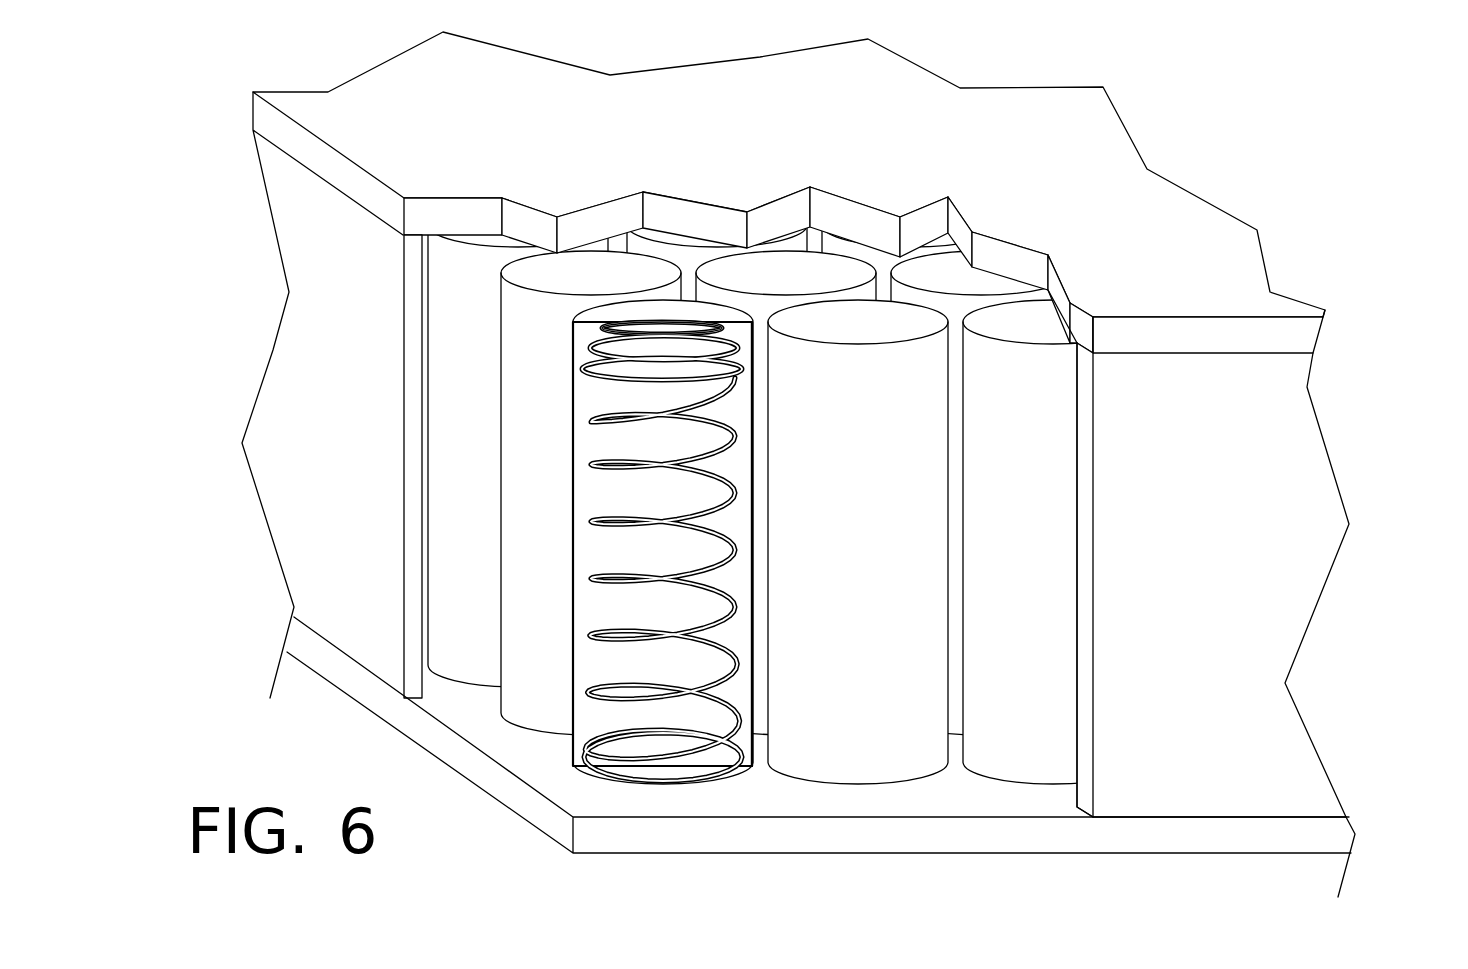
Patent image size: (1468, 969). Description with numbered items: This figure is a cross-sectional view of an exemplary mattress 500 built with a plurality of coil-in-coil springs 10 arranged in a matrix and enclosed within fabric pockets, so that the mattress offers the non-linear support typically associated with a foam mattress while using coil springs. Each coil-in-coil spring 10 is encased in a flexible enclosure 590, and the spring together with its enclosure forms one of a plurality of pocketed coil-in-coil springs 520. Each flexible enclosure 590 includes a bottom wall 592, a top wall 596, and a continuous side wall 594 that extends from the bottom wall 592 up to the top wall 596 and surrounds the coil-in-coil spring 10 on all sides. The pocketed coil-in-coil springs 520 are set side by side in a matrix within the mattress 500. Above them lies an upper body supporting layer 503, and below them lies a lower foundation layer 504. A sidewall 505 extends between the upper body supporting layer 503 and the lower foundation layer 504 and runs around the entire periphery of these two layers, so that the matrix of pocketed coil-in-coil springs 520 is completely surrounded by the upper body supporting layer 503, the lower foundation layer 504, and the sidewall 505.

The mattress 500 is at (769, 480).
The upper body supporting layer 503 is at (1192, 247).
The lower foundation layer 504 is at (1174, 834).
The sidewall 505 is at (1250, 467).
The pocketed coil-in-coil springs 520 is at (1022, 785).
The flexible enclosure 590 is at (540, 509).
The bottom wall 592 is at (743, 772).
The continuous side wall 594 is at (755, 485).
The top wall 596 is at (665, 313).
The coil-in-coil spring 10 is at (750, 612).